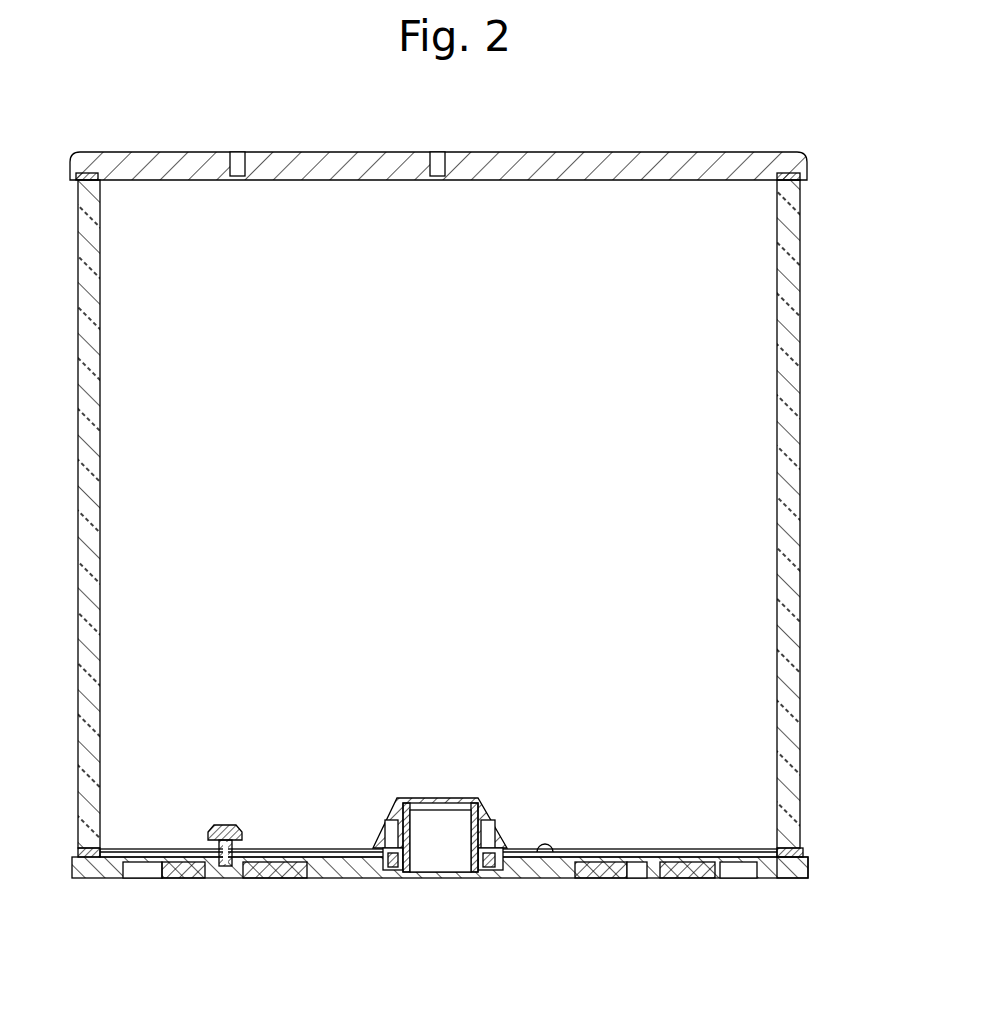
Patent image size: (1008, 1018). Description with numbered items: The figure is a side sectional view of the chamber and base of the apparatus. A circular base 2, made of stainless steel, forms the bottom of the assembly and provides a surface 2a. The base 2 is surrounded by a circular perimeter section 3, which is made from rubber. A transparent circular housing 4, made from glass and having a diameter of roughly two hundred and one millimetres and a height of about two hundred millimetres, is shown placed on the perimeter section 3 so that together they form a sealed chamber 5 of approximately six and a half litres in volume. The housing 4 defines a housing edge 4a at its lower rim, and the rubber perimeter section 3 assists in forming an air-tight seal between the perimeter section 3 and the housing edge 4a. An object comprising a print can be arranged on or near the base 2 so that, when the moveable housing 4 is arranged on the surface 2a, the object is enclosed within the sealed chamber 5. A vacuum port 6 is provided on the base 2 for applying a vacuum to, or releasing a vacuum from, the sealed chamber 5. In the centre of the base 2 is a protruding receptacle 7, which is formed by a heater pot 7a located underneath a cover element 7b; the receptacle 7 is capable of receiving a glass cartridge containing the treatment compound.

The base 2 is at (106, 868).
The surface 2a is at (537, 852).
The perimeter section 3 is at (796, 862).
The housing 4 is at (795, 355).
The housing edge 4a is at (786, 848).
The sealed chamber 5 is at (284, 458).
The vacuum port 6 is at (213, 826).
The receptacle 7 is at (462, 856).
The heater pot 7a is at (438, 858).
The cover element 7b is at (383, 858).